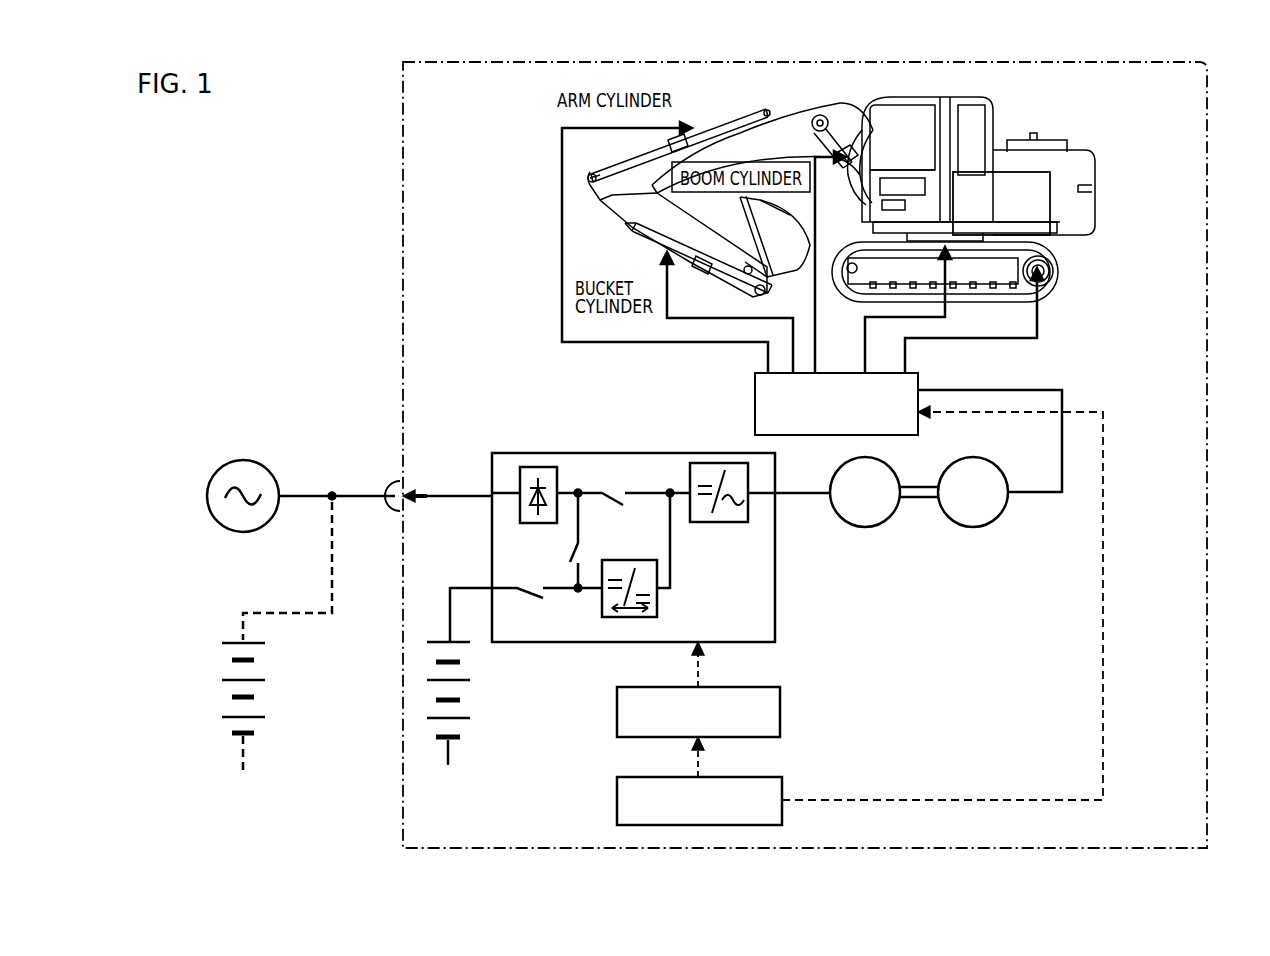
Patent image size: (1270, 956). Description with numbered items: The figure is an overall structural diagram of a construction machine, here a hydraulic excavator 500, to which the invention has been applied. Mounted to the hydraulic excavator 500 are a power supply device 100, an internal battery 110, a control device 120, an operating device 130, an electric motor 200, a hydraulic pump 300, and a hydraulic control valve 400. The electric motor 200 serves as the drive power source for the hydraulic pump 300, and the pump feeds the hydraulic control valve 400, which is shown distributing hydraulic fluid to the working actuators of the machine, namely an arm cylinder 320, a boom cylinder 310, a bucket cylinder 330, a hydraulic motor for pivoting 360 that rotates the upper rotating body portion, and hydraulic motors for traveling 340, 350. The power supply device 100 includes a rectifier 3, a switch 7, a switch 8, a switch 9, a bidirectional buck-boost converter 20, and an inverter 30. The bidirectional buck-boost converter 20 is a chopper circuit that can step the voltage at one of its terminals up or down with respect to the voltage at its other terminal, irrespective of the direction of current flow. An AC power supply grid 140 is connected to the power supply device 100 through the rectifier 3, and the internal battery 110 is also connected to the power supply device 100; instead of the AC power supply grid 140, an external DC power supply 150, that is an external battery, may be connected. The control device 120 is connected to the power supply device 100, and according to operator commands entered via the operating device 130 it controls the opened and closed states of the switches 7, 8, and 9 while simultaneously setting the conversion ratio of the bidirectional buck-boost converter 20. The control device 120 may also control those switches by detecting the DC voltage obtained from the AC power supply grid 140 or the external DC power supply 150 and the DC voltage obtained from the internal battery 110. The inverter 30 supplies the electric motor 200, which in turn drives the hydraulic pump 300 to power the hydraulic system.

The hydraulic excavator 500 is at (1207, 100).
The arm cylinder 320 is at (708, 123).
The boom cylinder 310 is at (870, 127).
The hydraulic motor for pivoting 360 is at (1050, 183).
The bucket cylinder 330 is at (647, 240).
The hydraulic motor for traveling 340 is at (1057, 273).
The hydraulic motor for traveling 350 is at (1088, 263).
The hydraulic control valve 400 is at (922, 385).
The electric motor 200 is at (883, 455).
The hydraulic pump 300 is at (1008, 503).
The power supply device 100 is at (635, 450).
The AC power supply grid 140 is at (273, 472).
The external DC power supply 150 is at (257, 677).
The rectifier 3 is at (537, 525).
The switch 8 is at (603, 491).
The switch 9 is at (581, 545).
The switch 7 is at (532, 597).
The inverter 30 is at (707, 523).
The bidirectional buck-boost converter 20 is at (683, 610).
The internal battery 110 is at (458, 688).
The control device 120 is at (782, 710).
The operating device 130 is at (782, 783).